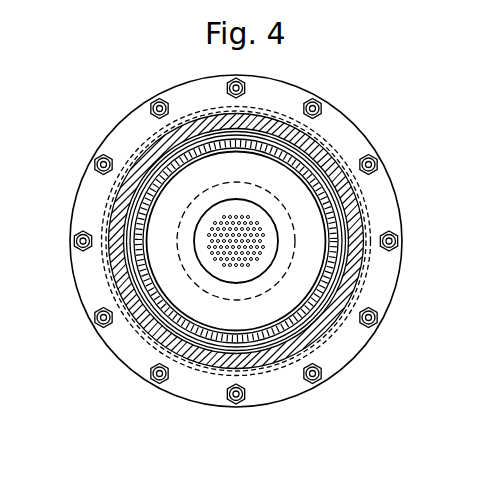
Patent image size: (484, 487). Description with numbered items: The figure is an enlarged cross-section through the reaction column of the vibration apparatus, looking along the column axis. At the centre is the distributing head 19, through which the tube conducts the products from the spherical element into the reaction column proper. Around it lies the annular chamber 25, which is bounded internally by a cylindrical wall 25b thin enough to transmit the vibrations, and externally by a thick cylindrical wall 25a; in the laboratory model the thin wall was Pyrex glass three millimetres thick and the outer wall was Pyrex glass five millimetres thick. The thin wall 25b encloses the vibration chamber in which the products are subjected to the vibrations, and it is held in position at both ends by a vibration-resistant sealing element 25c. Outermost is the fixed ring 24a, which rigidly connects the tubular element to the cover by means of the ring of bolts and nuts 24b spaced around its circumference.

The distributing head 19 is at (232, 226).
The fixed ring 24a is at (333, 118).
The bolts and nuts 24b is at (97, 167).
The annular chamber 25 is at (239, 352).
The thick cylindrical wall 25a is at (150, 140).
The cylindrical wall 25b is at (320, 222).
The sealing element 25c is at (150, 222).